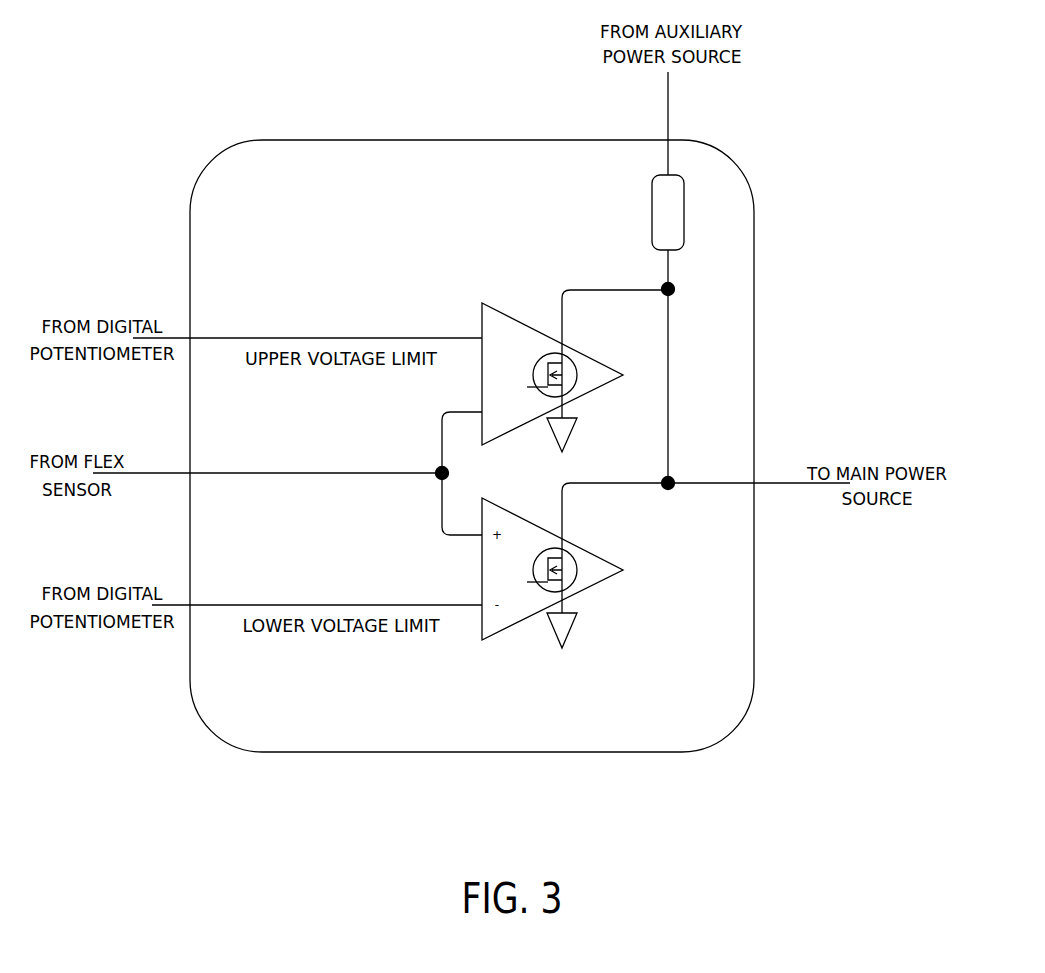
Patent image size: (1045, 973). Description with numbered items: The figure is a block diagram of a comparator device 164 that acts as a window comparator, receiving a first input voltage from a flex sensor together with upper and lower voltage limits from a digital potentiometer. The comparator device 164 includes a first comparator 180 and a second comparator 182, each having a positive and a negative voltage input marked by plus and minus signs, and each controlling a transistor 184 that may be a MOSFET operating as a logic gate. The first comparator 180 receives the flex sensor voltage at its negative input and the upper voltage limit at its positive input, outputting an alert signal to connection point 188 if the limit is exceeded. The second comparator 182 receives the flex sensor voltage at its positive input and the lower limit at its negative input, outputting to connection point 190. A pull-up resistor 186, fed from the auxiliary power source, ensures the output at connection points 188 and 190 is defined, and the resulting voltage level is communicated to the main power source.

The comparator device 164 is at (362, 140).
The first comparator 180 is at (482, 303).
The second comparator 182 is at (482, 498).
The transistor 184 is at (553, 353).
The pull-up resistor 186 is at (651, 192).
The connection point 188 is at (665, 283).
The connection point 190 is at (662, 478).